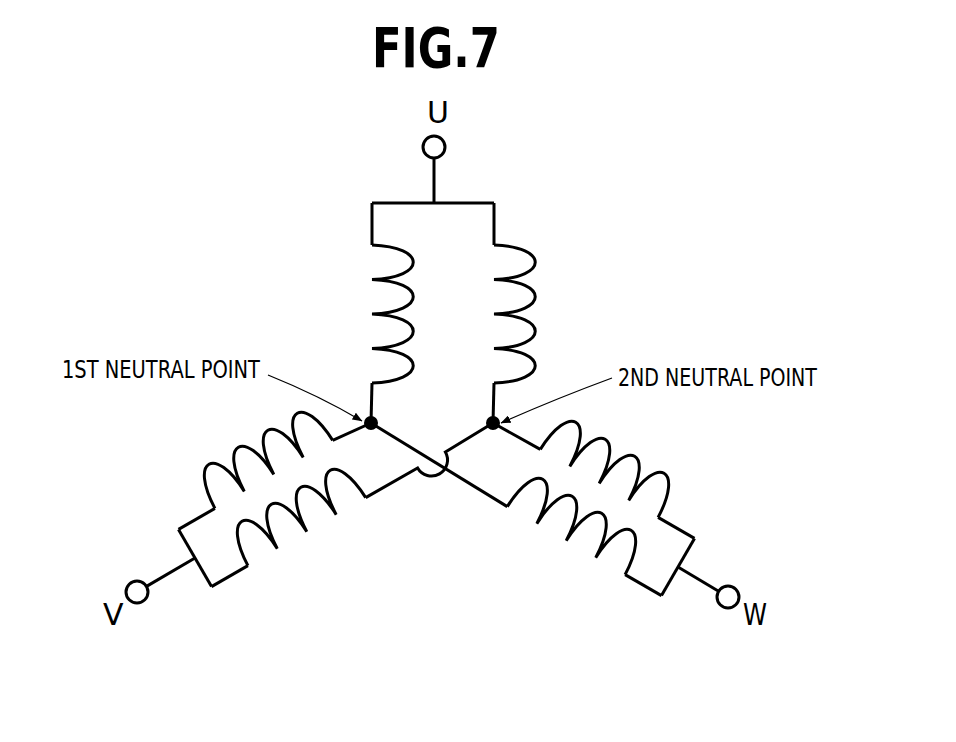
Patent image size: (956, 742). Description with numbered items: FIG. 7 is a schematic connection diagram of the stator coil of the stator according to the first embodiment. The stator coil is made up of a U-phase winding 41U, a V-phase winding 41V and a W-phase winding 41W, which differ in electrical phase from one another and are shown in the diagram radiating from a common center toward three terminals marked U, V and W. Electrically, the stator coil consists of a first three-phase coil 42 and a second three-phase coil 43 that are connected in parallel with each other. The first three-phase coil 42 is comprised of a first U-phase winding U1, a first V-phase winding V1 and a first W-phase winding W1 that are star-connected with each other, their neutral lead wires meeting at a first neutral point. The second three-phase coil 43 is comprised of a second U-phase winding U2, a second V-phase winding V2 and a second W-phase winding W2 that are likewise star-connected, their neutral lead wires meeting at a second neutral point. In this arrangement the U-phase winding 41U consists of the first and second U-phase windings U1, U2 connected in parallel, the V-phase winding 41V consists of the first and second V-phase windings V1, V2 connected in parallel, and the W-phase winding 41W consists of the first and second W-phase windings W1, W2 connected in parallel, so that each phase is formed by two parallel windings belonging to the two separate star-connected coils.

The U-phase winding 41U is at (441, 181).
The V-phase winding 41V is at (176, 571).
The W-phase winding 41W is at (692, 577).
The first three-phase coil 42 is at (473, 487).
The second three-phase coil 43 is at (399, 481).
The first U-phase winding U1 is at (373, 314).
The second U-phase winding U2 is at (534, 314).
The first V-phase winding V1 is at (265, 460).
The second V-phase winding V2 is at (301, 529).
The first W-phase winding W1 is at (571, 532).
The second W-phase winding W2 is at (608, 469).